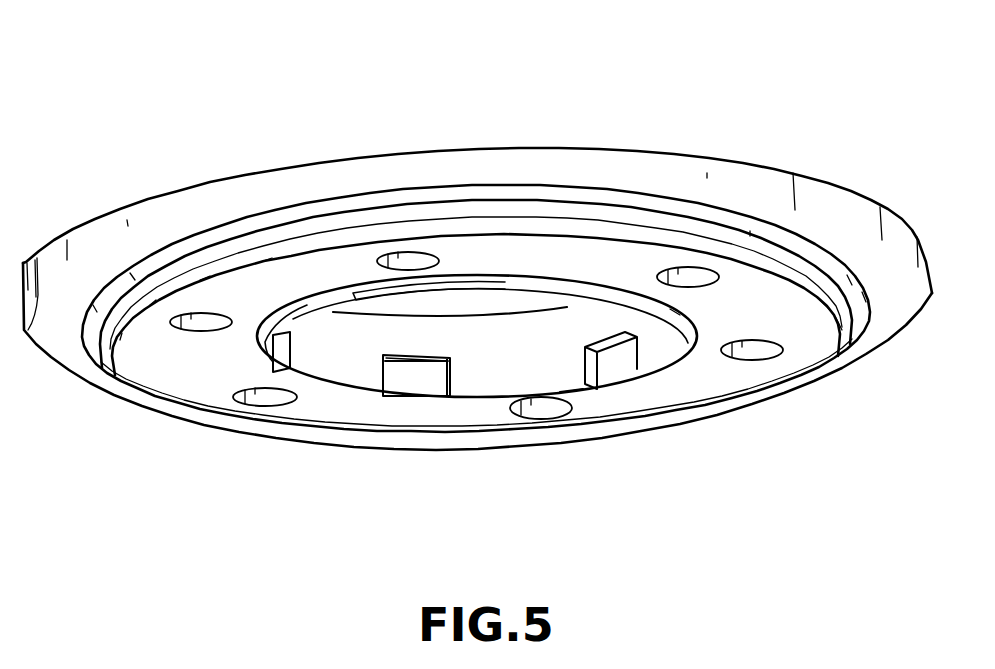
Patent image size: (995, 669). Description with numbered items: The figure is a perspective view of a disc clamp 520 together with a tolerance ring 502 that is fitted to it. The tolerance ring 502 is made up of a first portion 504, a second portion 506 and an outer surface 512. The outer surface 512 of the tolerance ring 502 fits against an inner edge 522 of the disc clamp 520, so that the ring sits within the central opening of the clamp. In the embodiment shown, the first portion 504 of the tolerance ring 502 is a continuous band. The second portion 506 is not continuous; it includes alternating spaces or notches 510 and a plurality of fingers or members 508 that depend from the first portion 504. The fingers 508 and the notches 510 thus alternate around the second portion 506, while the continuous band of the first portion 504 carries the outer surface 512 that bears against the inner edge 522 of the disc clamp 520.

The tolerance ring 502 is at (310, 367).
The first portion 504 is at (420, 343).
The second portion 506 is at (627, 367).
The fingers 508 is at (572, 384).
The notches 510 is at (570, 363).
The outer surface 512 is at (487, 280).
The disc clamp 520 is at (673, 152).
The inner edge 522 is at (400, 372).